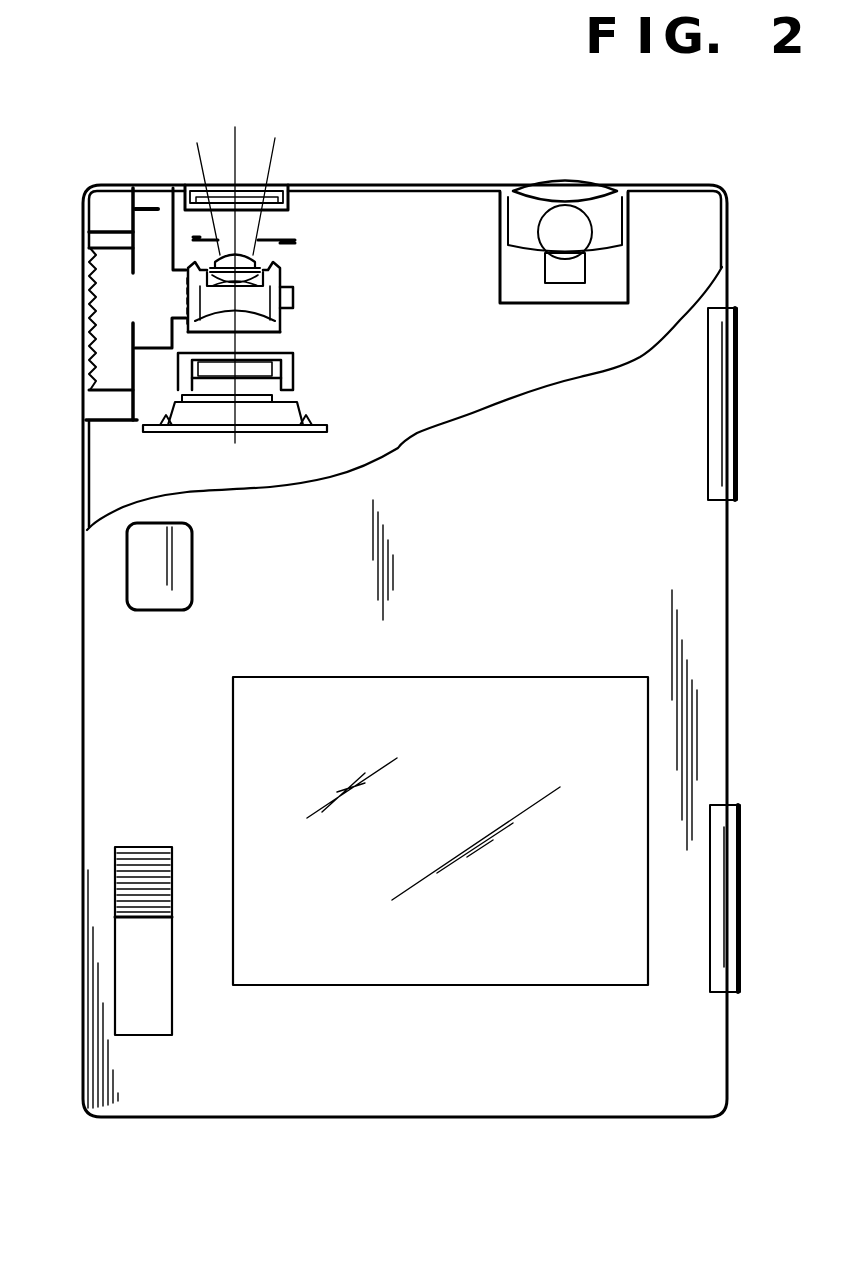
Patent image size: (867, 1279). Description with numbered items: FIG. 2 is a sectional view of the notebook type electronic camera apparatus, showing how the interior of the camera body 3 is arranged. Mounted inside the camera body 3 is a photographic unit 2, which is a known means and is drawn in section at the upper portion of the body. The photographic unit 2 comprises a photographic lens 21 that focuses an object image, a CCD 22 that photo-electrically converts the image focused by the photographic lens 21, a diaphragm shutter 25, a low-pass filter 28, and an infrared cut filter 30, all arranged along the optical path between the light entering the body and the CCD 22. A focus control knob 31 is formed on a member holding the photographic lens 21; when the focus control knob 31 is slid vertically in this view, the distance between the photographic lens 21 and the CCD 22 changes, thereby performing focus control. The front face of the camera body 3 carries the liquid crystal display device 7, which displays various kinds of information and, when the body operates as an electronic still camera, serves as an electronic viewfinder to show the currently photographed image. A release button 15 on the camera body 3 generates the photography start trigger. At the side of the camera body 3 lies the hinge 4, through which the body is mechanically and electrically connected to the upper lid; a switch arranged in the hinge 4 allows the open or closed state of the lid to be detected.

The photographic unit 2 is at (273, 302).
The camera body 3 is at (121, 740).
The hinge 4 is at (733, 377).
The liquid crystal display device 7 is at (498, 697).
The release button 15 is at (137, 592).
The photographic lens 21 is at (257, 295).
The CCD 22 is at (267, 415).
The diaphragm shutter 25 is at (288, 235).
The low-pass filter 28 is at (250, 205).
The infrared cut filter 30 is at (263, 371).
The focus control knob 31 is at (95, 292).